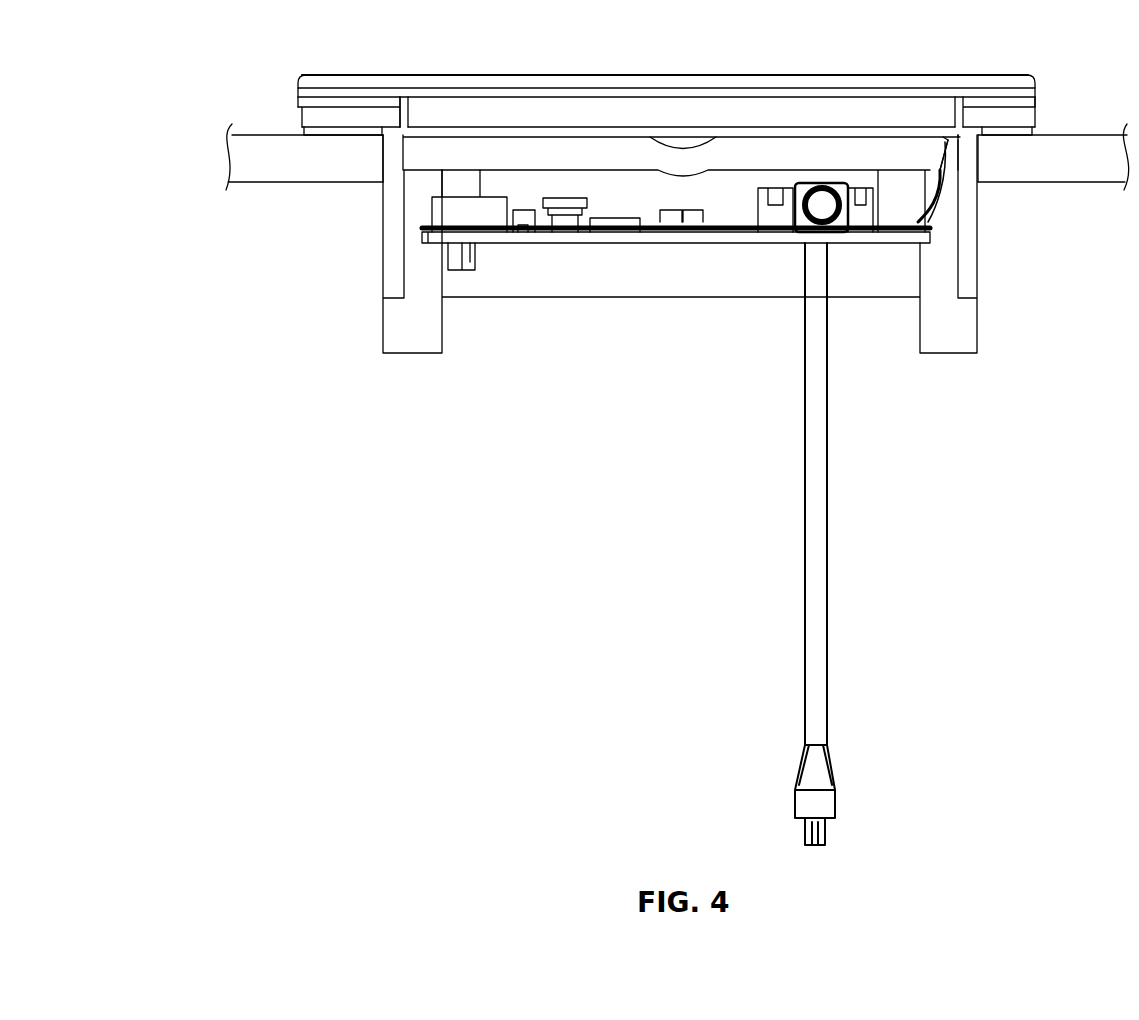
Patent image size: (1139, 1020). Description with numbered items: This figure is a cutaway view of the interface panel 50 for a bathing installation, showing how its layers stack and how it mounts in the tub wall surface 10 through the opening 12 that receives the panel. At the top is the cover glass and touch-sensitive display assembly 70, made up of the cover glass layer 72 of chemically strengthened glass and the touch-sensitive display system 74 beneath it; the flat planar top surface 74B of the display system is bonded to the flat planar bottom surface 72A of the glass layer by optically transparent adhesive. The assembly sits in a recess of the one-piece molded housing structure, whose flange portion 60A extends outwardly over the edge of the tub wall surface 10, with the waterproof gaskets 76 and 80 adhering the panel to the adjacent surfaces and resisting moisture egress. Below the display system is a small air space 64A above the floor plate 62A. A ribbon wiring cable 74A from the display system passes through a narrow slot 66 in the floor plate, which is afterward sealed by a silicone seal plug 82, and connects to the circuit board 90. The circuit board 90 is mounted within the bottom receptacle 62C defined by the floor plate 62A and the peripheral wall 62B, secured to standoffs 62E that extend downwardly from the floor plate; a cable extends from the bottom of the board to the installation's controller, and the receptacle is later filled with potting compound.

The interface panel 50 is at (116, 50).
The tub wall surface 10 is at (232, 163).
The opening in wall 12 is at (255, 135).
The cover glass and touch-sensitive display assembly 70 is at (287, 107).
The cover glass layer 72 is at (377, 78).
The flat planar bottom surface of the glass layer 72A is at (683, 95).
The touch-sensitive display system 74 is at (452, 120).
The flat planar top surface of the display system 74B is at (585, 97).
The ribbon wiring cable 74A is at (932, 203).
The flange portion 60A is at (340, 113).
The gasket 76 is at (1028, 100).
The gasket 80 is at (325, 130).
The air space 64A is at (413, 137).
The narrow slot 66 is at (940, 155).
The peripheral wall 62B is at (392, 284).
The bottom receptacle 62C is at (653, 204).
The floor plate 62A is at (520, 150).
The standoffs 62E is at (468, 187).
The circuit board 90 is at (597, 237).
The seal plug 82 is at (948, 180).